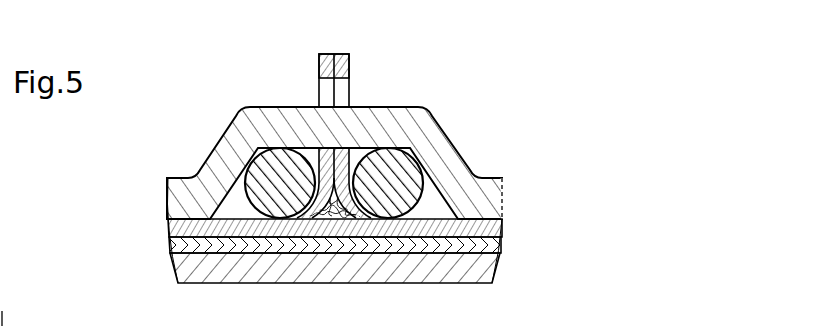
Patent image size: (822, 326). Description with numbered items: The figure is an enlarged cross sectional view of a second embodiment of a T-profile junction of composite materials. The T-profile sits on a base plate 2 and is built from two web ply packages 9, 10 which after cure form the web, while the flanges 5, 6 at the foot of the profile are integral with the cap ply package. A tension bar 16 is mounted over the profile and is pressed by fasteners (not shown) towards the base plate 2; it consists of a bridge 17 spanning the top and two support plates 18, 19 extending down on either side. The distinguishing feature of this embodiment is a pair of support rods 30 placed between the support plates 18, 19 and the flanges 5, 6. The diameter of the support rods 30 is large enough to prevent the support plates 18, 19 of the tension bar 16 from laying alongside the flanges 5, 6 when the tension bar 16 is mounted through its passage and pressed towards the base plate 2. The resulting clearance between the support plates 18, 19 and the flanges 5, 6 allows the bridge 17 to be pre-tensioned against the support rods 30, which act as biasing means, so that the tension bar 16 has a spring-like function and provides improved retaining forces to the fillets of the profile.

The base plate 2 is at (190, 270).
The flange 5 is at (500, 231).
The flange 6 is at (172, 232).
The web ply package 9 is at (344, 56).
The web ply package 10 is at (326, 55).
The tension bar 16 is at (212, 108).
The bridge 17 is at (275, 115).
The support plate 18 is at (486, 191).
The support plate 19 is at (172, 202).
The support rods 30 is at (265, 200).